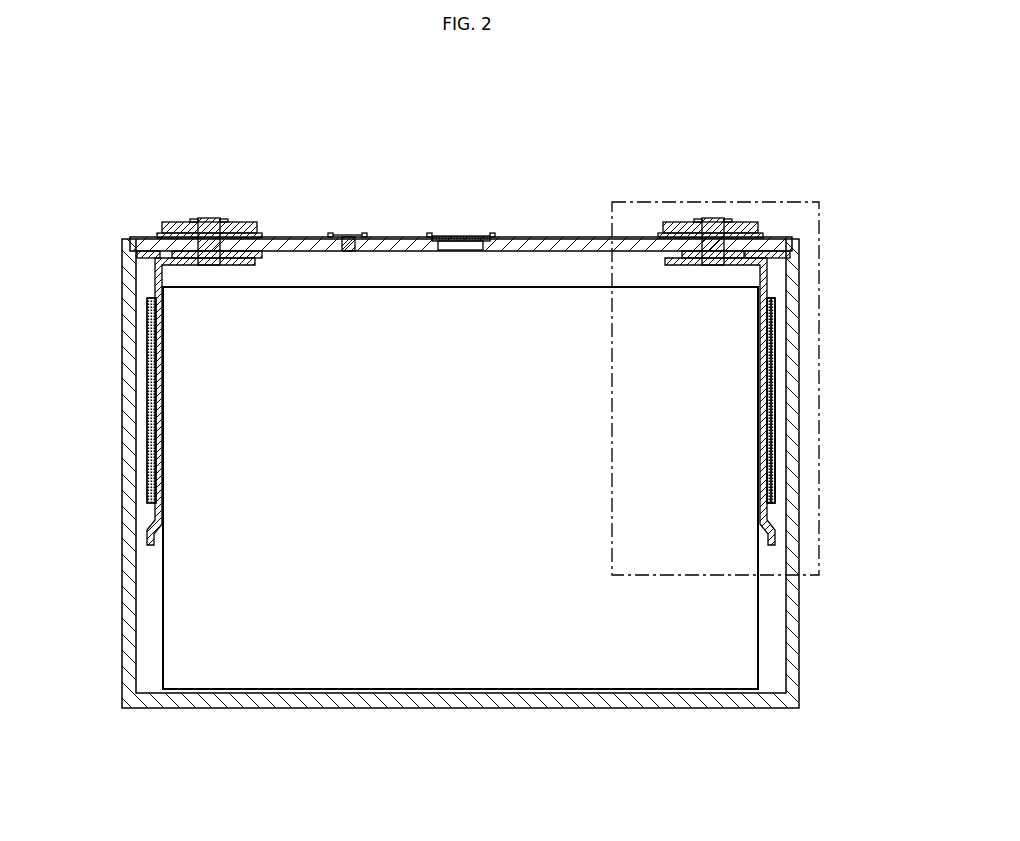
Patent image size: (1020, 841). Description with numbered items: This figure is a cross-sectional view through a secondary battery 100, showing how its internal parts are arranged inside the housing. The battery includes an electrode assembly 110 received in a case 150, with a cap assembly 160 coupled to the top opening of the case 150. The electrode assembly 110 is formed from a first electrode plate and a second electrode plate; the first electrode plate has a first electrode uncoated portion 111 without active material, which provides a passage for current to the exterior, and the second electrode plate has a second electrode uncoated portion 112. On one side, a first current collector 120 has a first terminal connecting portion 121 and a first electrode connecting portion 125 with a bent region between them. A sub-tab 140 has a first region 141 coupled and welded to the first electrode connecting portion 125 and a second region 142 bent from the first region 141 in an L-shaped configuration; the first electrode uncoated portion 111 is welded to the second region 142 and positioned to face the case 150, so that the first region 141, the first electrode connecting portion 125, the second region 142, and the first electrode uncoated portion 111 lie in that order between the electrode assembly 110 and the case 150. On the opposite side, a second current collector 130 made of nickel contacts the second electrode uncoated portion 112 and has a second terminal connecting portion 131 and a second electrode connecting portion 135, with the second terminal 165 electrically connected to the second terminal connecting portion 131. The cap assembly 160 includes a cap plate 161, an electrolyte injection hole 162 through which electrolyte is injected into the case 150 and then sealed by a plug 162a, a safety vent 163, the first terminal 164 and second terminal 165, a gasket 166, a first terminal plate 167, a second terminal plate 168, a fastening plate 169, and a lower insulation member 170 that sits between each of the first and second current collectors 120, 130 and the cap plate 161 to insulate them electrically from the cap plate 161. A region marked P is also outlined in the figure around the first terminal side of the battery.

The secondary battery 100 is at (520, 150).
The electrode assembly 110 is at (479, 697).
The first electrode uncoated portion 111 is at (774, 470).
The second electrode uncoated portion 112 is at (152, 430).
The first current collector 120 is at (876, 270).
The first terminal connecting portion 121 is at (768, 318).
The first electrode connecting portion 125 is at (768, 264).
The second current collector 130 is at (50, 270).
The second terminal connecting portion 131 is at (150, 320).
The second electrode connecting portion 135 is at (155, 262).
The sub-tab 140 is at (876, 365).
The first region 141 is at (770, 373).
The second region 142 is at (772, 412).
The case 150 is at (790, 540).
The cap assembly 160 is at (399, 236).
The cap plate 161 is at (553, 246).
The electrolyte injection hole 162 is at (345, 252).
The plug 162a is at (348, 234).
The safety vent 163 is at (460, 235).
The first terminal 164 is at (714, 218).
The second terminal 165 is at (209, 218).
The gasket 166 is at (255, 224).
The first terminal plate 167 is at (670, 222).
The second terminal plate 168 is at (168, 222).
The fastening plate 169 is at (156, 234).
The lower insulation member 170 is at (130, 240).
The terminal region P is at (803, 200).